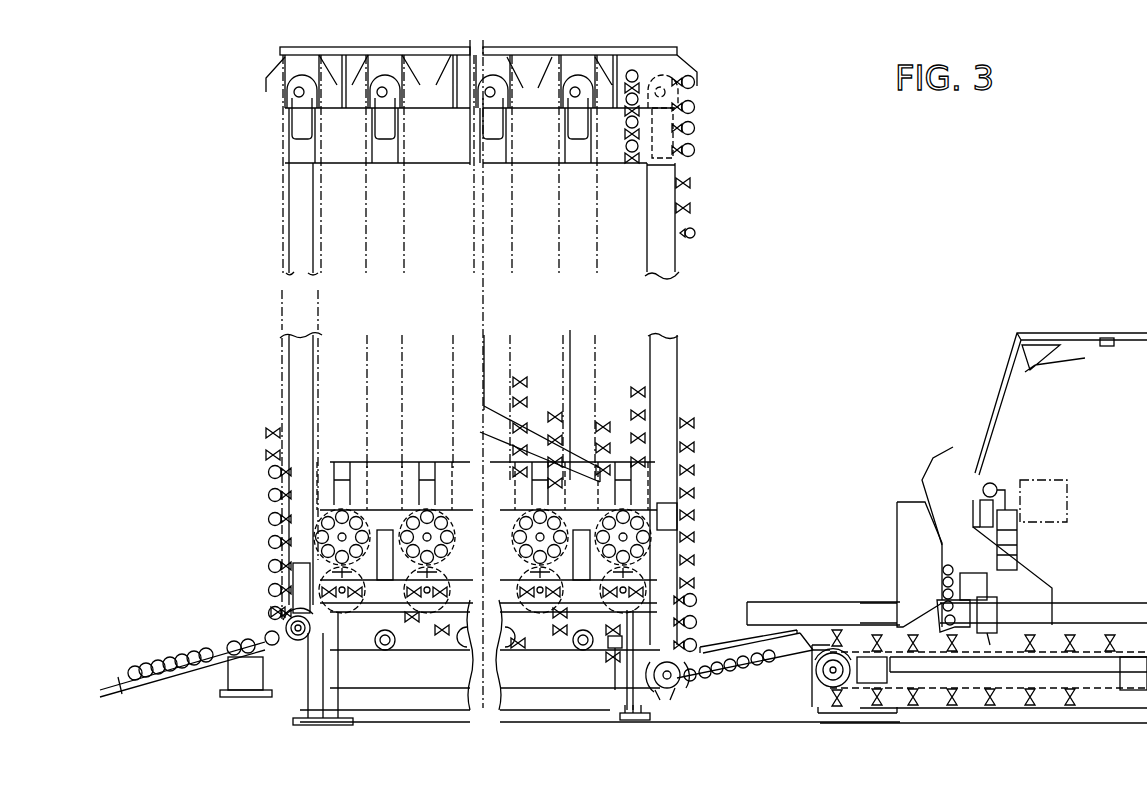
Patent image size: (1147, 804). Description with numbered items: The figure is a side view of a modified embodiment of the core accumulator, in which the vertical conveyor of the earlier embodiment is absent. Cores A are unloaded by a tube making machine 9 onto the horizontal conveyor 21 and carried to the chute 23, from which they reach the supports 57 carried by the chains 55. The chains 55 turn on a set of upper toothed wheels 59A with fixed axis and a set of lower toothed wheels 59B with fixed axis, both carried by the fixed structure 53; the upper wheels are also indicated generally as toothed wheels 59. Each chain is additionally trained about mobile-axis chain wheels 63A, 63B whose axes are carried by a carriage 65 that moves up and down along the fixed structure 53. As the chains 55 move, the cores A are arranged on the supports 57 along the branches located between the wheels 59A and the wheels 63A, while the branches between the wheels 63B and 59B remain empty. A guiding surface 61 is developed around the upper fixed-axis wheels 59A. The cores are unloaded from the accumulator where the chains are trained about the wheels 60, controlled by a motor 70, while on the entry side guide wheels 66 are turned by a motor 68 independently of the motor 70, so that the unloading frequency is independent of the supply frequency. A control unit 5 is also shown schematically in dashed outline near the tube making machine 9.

The control unit 5 is at (1050, 468).
The tube making machine 9 is at (996, 350).
The horizontal conveyor 21 is at (887, 720).
The chute 23 is at (731, 676).
The fixed structure 53 is at (624, 50).
The chains 55 is at (274, 230).
The supports 57 is at (692, 234).
The gripper unit 59 is at (580, 56).
The upper toothed wheels 59A is at (386, 56).
The lower toothed wheels 59B is at (414, 650).
The wheels 60 is at (316, 642).
The guiding surface 61 is at (264, 72).
The chain wheels 63A is at (414, 462).
The chain wheels 63B is at (528, 650).
The carriage 65 is at (352, 462).
The guide wheels 66 is at (656, 716).
The motor 68 is at (684, 682).
The motor 70 is at (300, 648).
The cores A is at (692, 128).